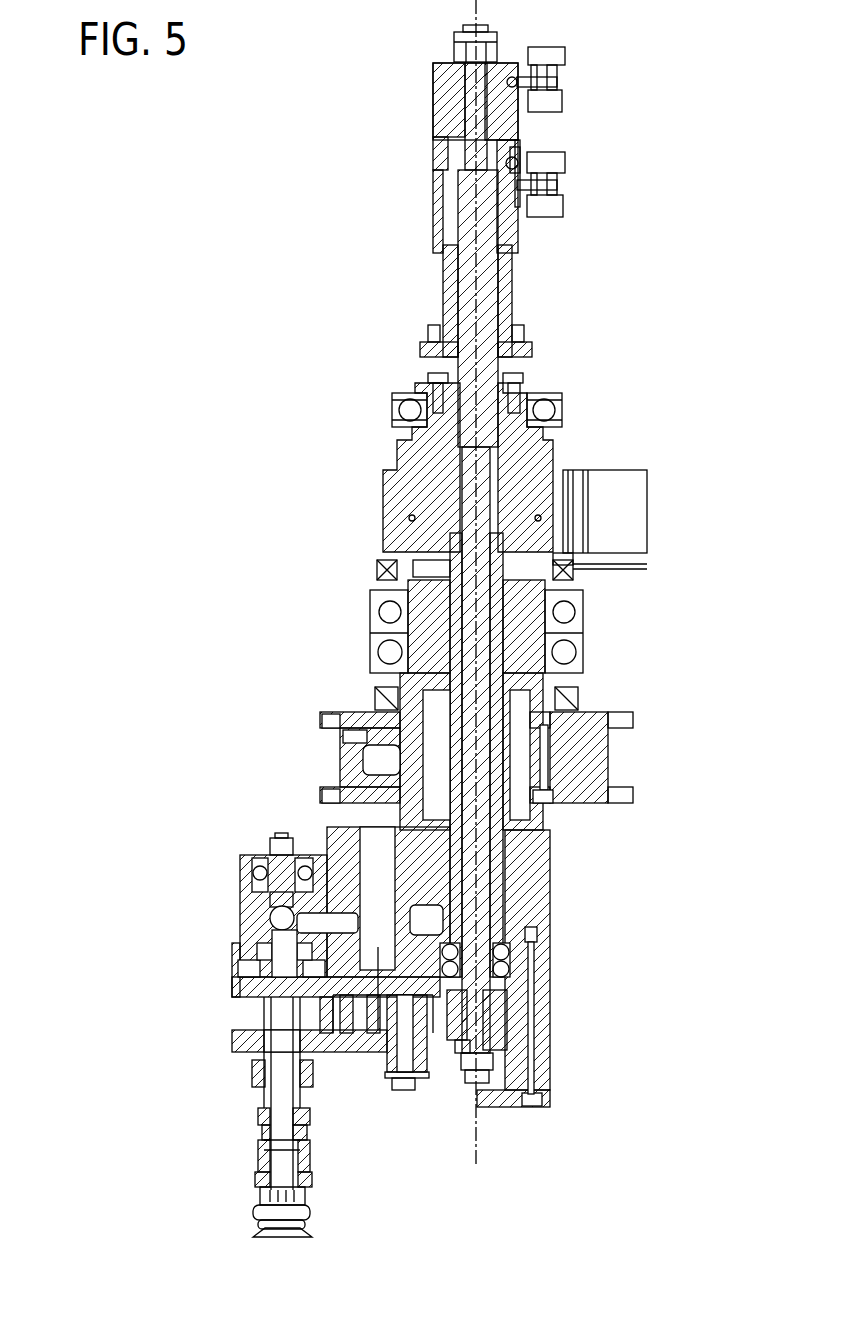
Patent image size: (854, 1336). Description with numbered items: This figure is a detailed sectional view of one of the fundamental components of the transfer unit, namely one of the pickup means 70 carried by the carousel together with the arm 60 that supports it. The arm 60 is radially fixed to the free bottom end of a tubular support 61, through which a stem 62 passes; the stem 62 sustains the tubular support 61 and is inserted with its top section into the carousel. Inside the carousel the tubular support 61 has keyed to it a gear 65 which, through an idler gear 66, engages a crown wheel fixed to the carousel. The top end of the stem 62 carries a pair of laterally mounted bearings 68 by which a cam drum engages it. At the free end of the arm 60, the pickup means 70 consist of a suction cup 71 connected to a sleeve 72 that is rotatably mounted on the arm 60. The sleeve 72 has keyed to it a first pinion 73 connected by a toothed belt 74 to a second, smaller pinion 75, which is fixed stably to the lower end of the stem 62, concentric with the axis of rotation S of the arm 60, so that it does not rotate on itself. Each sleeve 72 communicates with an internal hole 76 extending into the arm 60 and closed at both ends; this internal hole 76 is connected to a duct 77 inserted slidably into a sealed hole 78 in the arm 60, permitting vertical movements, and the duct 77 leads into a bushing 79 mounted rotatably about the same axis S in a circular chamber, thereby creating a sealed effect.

The arm 60 is at (380, 840).
The tubular support 61 is at (533, 840).
The stem 62 is at (482, 927).
The gear 65 is at (550, 483).
The idler gear 66 is at (627, 510).
The bearings 68 is at (530, 52).
The pickup means 70 is at (333, 1213).
The suction cup 71 is at (265, 1228).
The sleeve 72 is at (283, 1108).
The first pinion 73 is at (317, 1027).
The toothed belt 74 is at (448, 1028).
The second pinion 75 is at (493, 1020).
The internal hole 76 is at (325, 925).
The duct 77 is at (377, 1030).
The sealed hole 78 is at (330, 875).
The bushing 79 is at (595, 752).
The spindle axis S is at (486, 587).